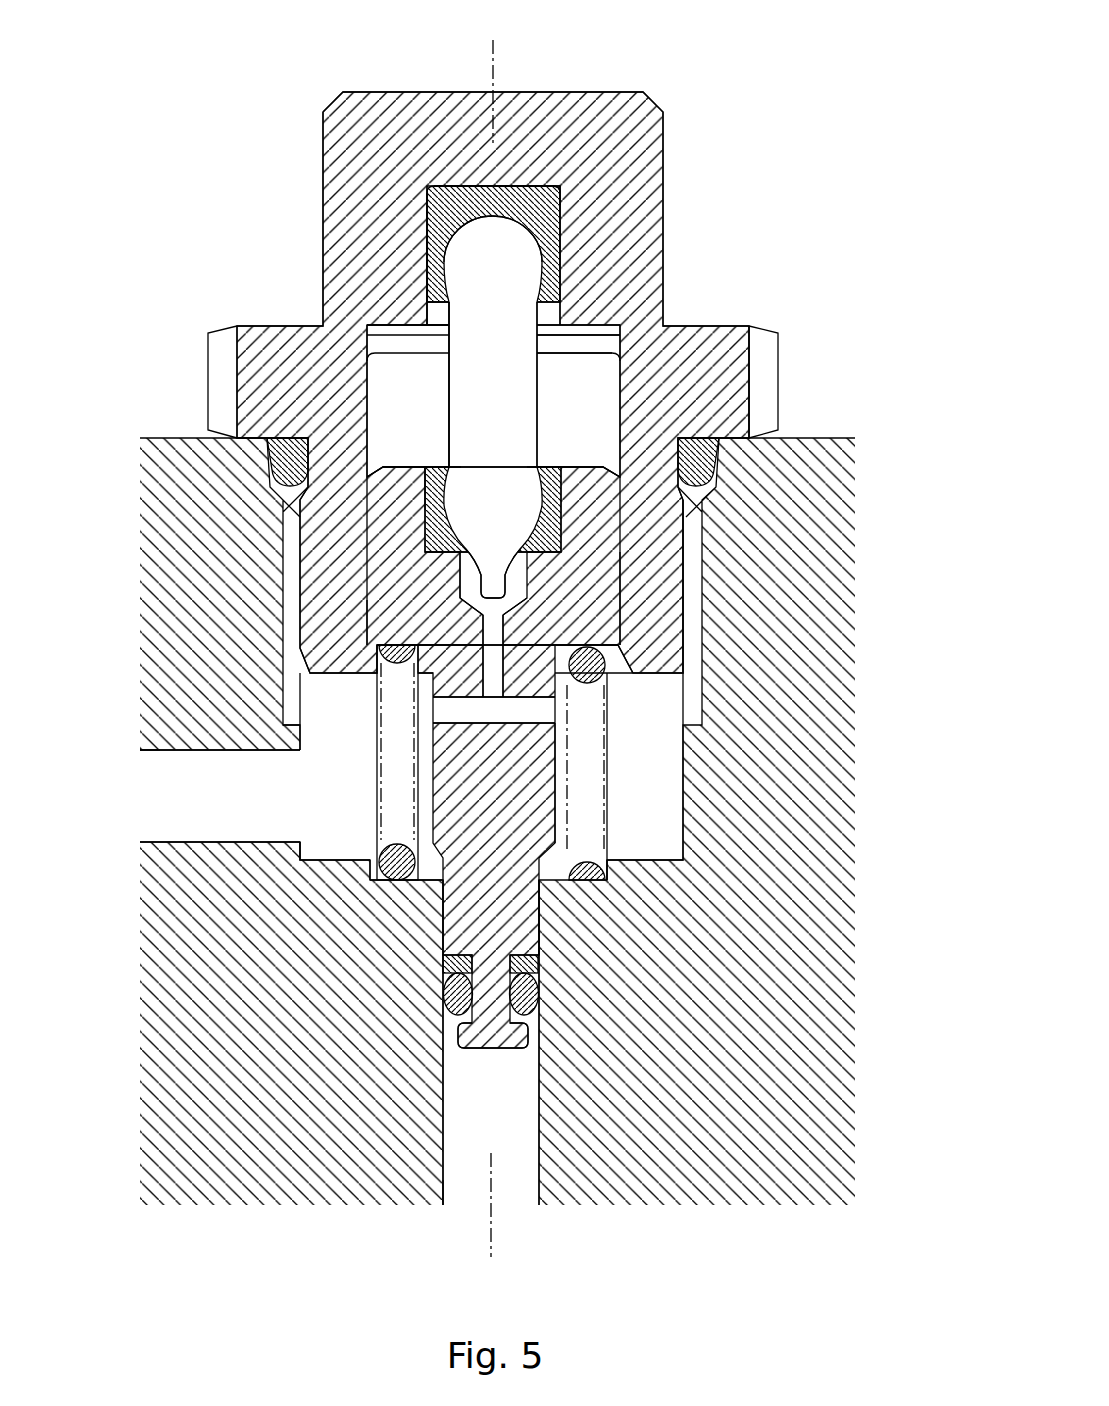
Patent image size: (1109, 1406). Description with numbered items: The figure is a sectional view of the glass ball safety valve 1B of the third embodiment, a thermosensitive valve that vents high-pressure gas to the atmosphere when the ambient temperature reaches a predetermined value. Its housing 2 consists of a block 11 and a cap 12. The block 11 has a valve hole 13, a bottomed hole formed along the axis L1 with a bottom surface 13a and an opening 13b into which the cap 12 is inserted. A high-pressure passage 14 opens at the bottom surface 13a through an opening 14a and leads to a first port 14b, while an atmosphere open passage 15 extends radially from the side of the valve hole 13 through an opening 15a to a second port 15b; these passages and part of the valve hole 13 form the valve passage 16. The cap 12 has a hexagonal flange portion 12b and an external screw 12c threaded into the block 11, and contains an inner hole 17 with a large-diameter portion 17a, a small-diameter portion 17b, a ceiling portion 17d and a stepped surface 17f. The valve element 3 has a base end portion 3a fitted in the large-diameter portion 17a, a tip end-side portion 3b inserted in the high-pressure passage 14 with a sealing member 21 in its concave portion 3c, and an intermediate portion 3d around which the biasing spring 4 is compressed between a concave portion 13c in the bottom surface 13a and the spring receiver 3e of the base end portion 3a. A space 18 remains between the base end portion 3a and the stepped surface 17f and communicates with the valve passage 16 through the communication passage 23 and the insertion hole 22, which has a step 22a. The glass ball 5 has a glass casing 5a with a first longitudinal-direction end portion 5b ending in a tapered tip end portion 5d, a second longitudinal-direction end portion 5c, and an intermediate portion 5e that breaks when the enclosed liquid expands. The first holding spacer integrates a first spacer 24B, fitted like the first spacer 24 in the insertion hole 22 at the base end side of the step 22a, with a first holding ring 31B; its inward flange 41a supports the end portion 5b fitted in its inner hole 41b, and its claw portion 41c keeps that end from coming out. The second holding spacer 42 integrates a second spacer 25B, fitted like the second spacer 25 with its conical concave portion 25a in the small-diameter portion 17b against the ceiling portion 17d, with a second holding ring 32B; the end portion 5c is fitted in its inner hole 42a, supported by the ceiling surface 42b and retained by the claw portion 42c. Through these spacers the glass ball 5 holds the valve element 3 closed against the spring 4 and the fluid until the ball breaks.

The safety valve 1B is at (504, 648).
The housing 2 is at (540, 648).
The valve element 3 is at (607, 455).
The base end portion 3a is at (600, 568).
The tip end-side portion 3b is at (525, 922).
The concave portion 3c is at (515, 1026).
The intermediate portion 3d is at (557, 783).
The spring receiver 3e is at (603, 667).
The biasing spring 4 is at (587, 757).
The glass ball 5 is at (553, 398).
The casing 5a is at (527, 367).
The first longitudinal-direction end portion 5b is at (460, 583).
The second longitudinal-direction end portion 5c is at (547, 187).
The tip end portion 5d is at (475, 608).
The intermediate portion 5e is at (452, 388).
The block 11 is at (840, 463).
The cap 12 is at (747, 413).
The flange portion 12b is at (722, 327).
The external screw 12c is at (705, 645).
The valve hole 13 is at (326, 725).
The bottom surface 13a is at (370, 872).
The opening 13b is at (695, 481).
The concave portion 13c is at (615, 873).
The high-pressure passage 14 is at (478, 1128).
The opening 14a is at (410, 875).
The first port 14b is at (460, 1198).
The atmosphere open passage 15 is at (204, 813).
The opening 15a is at (300, 843).
The second port 15b is at (132, 808).
The valve passage 16 is at (296, 742).
The inner hole 17 is at (372, 430).
The large-diameter portion 17a is at (367, 612).
The small-diameter portion 17b is at (428, 308).
The ceiling portion 17d is at (513, 186).
The stepped surface 17f is at (395, 337).
The space 18 is at (391, 418).
The sealing member 21 is at (527, 993).
The insertion hole 22 is at (542, 462).
The step 22a is at (533, 585).
The communication passage 23 is at (495, 712).
The first spacer 24 is at (560, 530).
The first spacer 24B is at (437, 530).
The second spacer 25 is at (470, 187).
The concave portion 25a is at (470, 237).
The second spacer 25B is at (560, 205).
The first holding ring 31B is at (430, 499).
The second holding ring 32B is at (560, 247).
The inward flange 41a is at (440, 548).
The inner hole 41b is at (458, 466).
The claw portion 41c is at (527, 466).
The second holding spacer 42 is at (578, 334).
The inner hole 42a is at (427, 243).
The ceiling surface 42b is at (473, 188).
The claw portion 42c is at (450, 297).
The axis L1 is at (492, 1222).